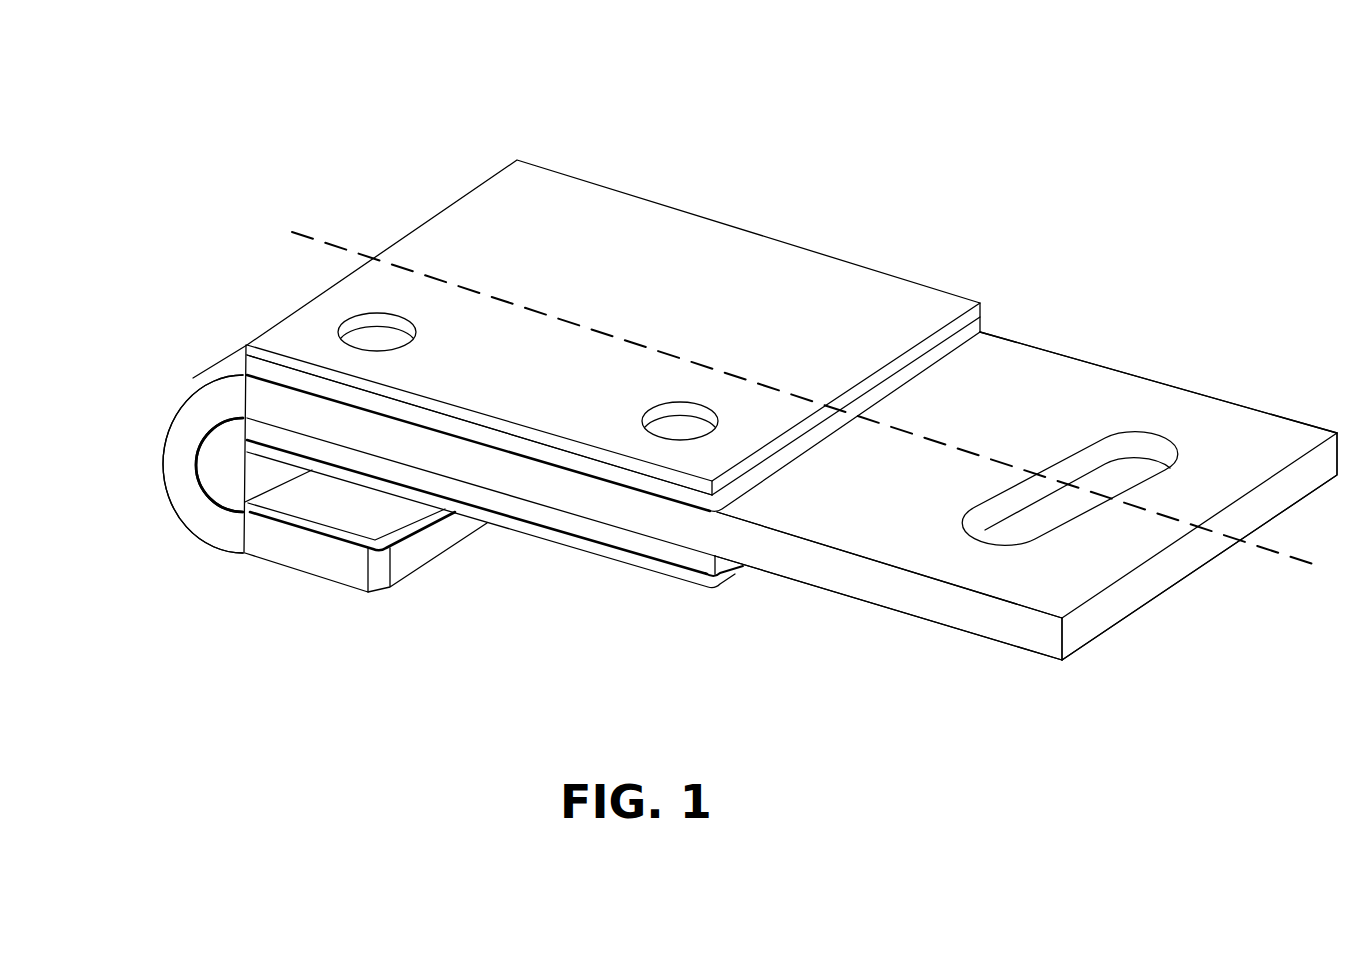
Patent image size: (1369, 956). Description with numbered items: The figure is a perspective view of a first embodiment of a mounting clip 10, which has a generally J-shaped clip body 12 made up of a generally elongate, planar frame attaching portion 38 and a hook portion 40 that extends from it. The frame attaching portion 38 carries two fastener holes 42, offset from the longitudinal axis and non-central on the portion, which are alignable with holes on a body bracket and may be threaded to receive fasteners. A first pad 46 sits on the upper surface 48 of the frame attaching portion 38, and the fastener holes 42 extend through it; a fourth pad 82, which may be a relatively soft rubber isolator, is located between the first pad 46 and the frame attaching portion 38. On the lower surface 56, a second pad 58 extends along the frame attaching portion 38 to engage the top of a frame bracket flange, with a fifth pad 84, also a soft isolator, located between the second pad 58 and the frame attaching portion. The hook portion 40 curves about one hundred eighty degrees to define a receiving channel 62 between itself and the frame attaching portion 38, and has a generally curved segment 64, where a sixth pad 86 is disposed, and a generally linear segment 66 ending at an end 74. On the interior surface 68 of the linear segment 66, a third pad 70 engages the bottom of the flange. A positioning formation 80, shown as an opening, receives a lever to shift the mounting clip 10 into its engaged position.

The mounting clip 10 is at (1045, 143).
The clip body 12 is at (1105, 363).
The frame attaching portion 38 is at (1000, 370).
The upper surface 48 is at (883, 547).
The lower surface 56 is at (943, 628).
The positioning formation 80 is at (1092, 530).
The first pad 46 is at (593, 213).
The fastener hole 42 is at (688, 423).
The fourth pad 82 is at (228, 360).
The hook portion 40 is at (163, 423).
The curved segment 64 is at (183, 483).
The sixth pad 86 is at (227, 473).
The second pad 58 is at (657, 570).
The fifth pad 84 is at (742, 572).
The receiving channel 62 is at (485, 523).
The linear segment 66 is at (313, 558).
The interior surface 68 is at (262, 522).
The third pad 70 is at (368, 525).
The end 74 is at (407, 552).